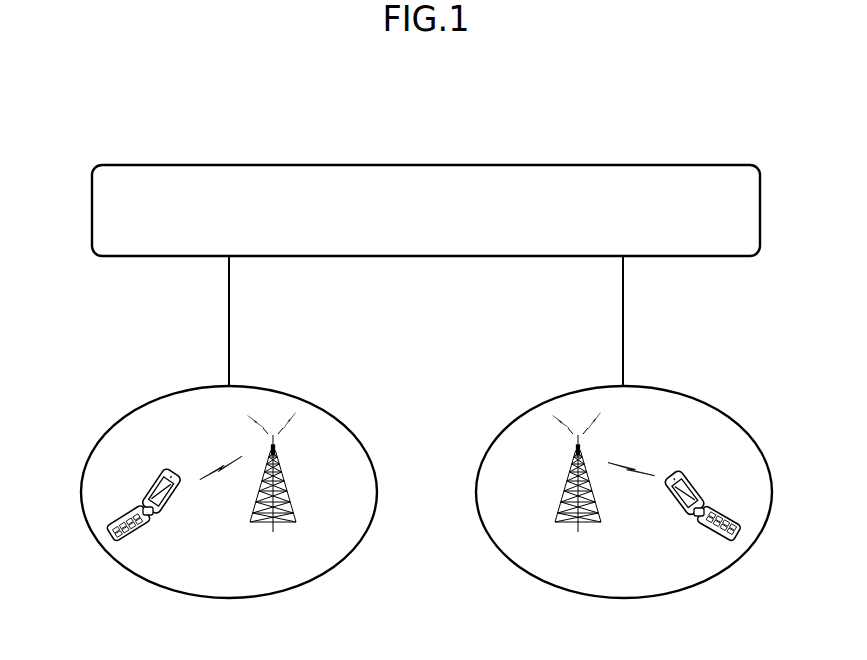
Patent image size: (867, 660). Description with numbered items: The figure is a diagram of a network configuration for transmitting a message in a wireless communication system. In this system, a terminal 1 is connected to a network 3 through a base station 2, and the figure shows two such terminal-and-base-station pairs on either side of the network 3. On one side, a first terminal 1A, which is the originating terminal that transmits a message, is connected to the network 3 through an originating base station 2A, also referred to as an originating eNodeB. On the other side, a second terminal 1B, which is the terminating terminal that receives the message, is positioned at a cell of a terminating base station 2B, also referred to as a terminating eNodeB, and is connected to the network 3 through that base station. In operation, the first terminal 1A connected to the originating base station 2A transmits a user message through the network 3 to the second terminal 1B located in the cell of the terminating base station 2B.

The terminal 1 is at (105, 600).
The base station 2 is at (205, 332).
The network 3 is at (92, 210).
The first terminal 1A is at (155, 528).
The second terminal 1B is at (692, 524).
The originating base station 2A is at (288, 493).
The terminating base station 2B is at (562, 490).